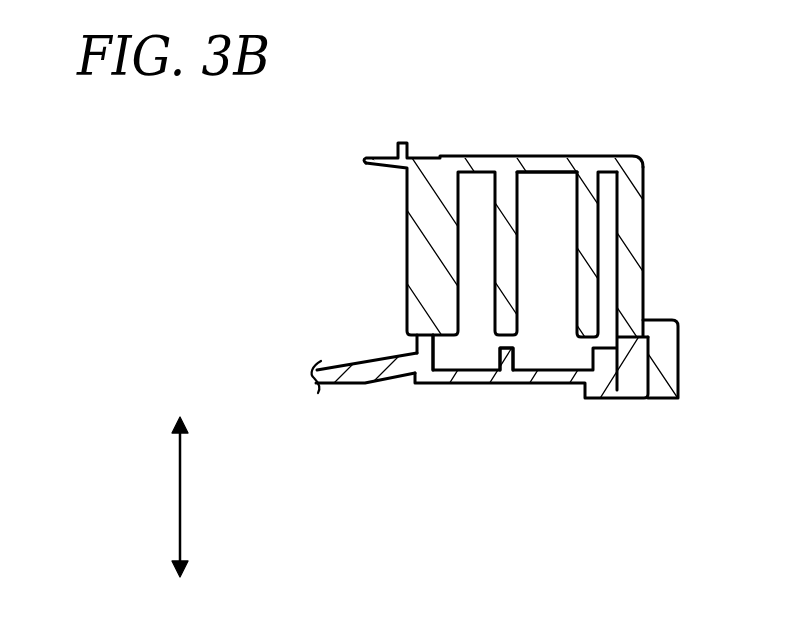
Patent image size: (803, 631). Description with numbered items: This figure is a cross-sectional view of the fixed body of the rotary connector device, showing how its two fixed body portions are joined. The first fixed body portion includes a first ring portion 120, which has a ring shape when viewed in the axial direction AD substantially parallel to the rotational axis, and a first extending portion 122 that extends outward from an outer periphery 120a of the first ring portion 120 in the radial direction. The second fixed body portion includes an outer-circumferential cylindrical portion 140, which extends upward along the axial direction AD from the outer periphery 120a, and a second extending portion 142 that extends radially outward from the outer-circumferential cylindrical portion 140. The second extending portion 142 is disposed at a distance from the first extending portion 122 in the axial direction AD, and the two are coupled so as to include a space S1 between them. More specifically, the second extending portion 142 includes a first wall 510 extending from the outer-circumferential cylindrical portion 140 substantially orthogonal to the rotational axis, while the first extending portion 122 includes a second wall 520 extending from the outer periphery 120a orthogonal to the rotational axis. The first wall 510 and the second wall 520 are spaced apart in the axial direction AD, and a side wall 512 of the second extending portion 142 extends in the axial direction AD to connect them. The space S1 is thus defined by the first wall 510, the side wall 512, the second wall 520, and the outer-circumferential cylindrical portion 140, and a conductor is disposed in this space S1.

The first ring portion 120 is at (340, 383).
The outer periphery 120a is at (416, 384).
The first extending portion 122 is at (580, 510).
The outer-circumferential cylindrical portion 140 is at (427, 192).
The second extending portion 142 is at (656, 198).
The first wall 510 is at (592, 165).
The side wall 512 is at (637, 235).
The second wall 520 is at (512, 384).
The space S1 is at (543, 190).
The axial direction AD is at (181, 500).